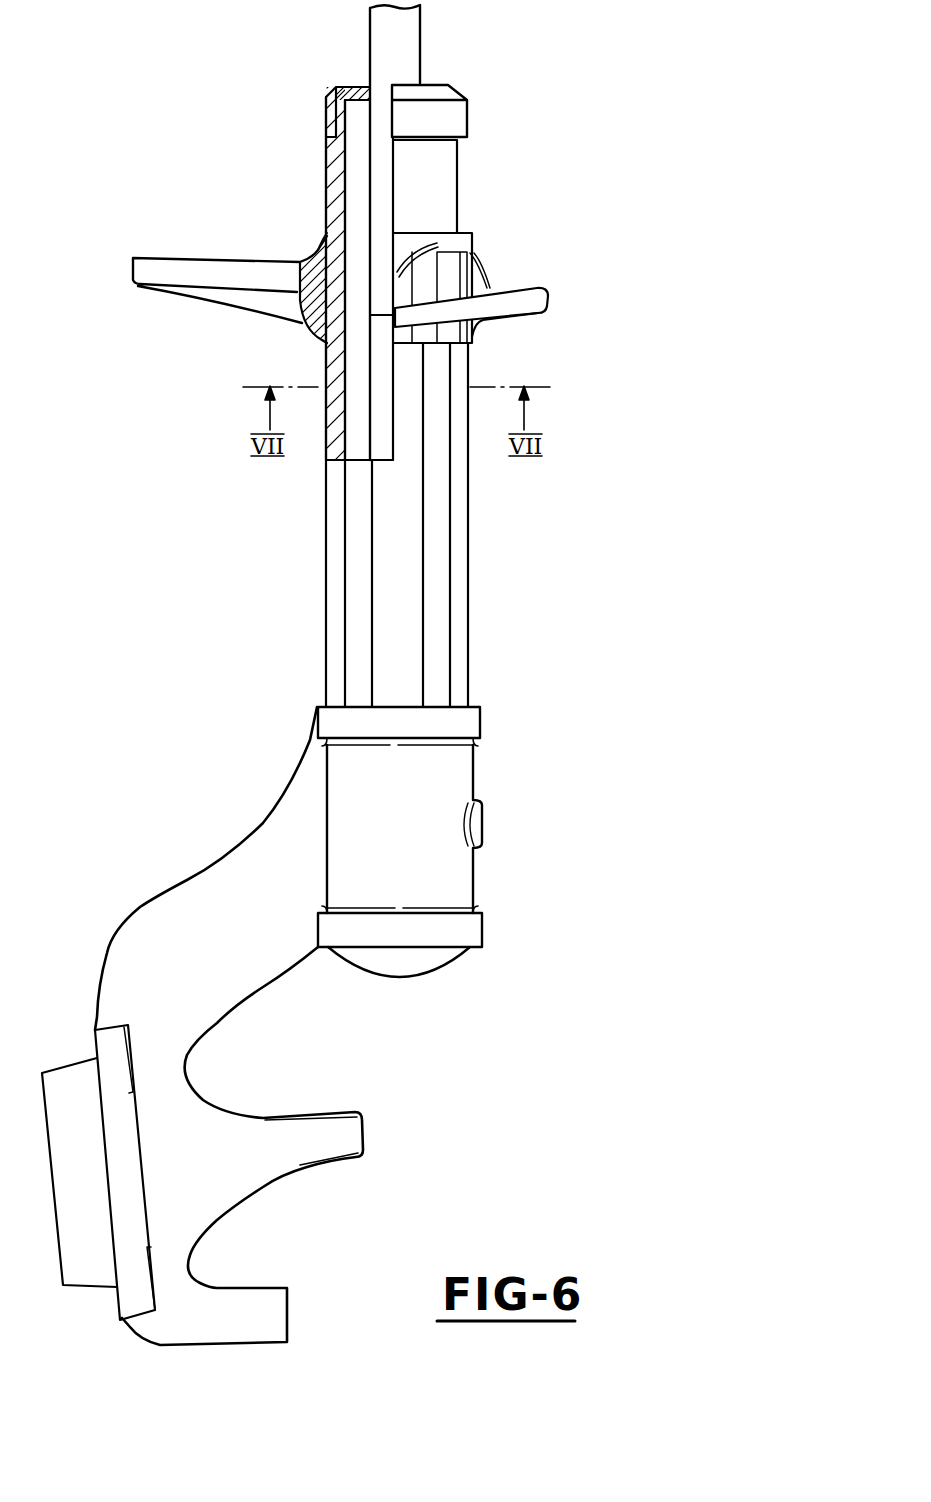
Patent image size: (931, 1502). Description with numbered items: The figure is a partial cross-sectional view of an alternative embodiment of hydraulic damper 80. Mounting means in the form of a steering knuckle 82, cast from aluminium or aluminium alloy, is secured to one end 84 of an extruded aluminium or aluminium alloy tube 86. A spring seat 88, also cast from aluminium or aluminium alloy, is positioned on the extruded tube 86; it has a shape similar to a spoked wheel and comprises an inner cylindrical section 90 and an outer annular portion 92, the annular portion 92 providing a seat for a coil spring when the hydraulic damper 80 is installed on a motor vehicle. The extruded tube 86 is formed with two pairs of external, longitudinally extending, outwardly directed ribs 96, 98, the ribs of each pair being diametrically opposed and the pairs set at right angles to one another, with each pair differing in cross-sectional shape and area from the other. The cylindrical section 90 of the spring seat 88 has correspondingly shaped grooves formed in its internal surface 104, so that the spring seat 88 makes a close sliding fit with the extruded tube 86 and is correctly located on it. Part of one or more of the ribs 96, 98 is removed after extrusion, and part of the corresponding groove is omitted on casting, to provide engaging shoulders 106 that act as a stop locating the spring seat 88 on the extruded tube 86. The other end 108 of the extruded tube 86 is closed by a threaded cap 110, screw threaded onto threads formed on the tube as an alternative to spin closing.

The hydraulic damper 80 is at (578, 256).
The steering knuckle 82 is at (175, 883).
The one end 84 is at (468, 948).
The extruded tube 86 is at (440, 655).
The spring seat 88 is at (232, 310).
The inner cylindrical section 90 is at (463, 242).
The outer annular portion 92 is at (550, 300).
The ribs 96 is at (333, 568).
The ribs 98 is at (410, 596).
The internal surface 104 is at (312, 325).
The engaging shoulders 106 is at (323, 240).
The other end 108 is at (338, 85).
The threaded cap 110 is at (468, 125).